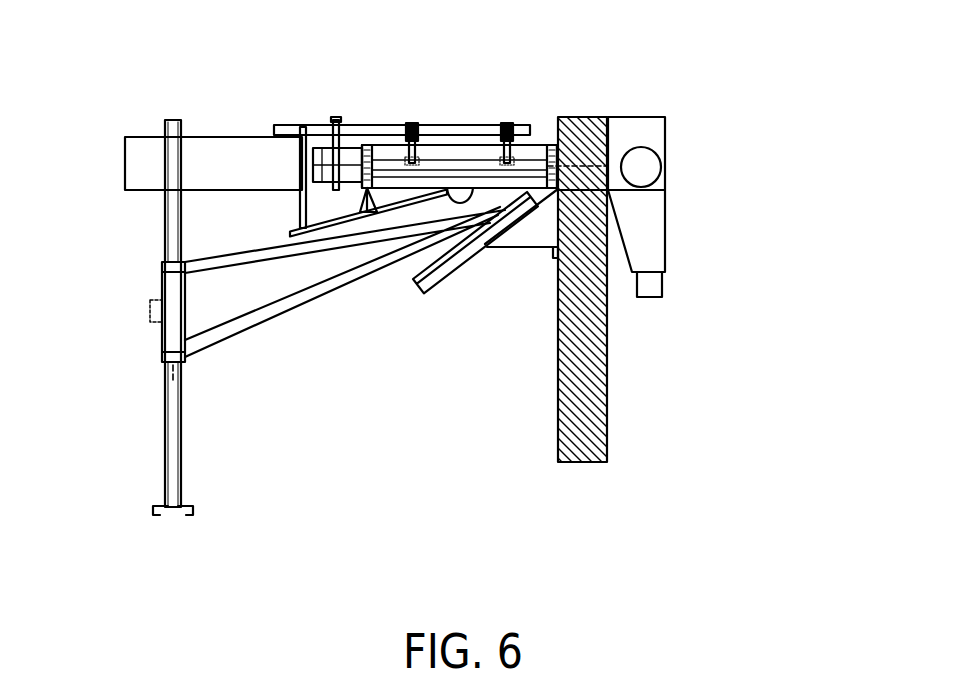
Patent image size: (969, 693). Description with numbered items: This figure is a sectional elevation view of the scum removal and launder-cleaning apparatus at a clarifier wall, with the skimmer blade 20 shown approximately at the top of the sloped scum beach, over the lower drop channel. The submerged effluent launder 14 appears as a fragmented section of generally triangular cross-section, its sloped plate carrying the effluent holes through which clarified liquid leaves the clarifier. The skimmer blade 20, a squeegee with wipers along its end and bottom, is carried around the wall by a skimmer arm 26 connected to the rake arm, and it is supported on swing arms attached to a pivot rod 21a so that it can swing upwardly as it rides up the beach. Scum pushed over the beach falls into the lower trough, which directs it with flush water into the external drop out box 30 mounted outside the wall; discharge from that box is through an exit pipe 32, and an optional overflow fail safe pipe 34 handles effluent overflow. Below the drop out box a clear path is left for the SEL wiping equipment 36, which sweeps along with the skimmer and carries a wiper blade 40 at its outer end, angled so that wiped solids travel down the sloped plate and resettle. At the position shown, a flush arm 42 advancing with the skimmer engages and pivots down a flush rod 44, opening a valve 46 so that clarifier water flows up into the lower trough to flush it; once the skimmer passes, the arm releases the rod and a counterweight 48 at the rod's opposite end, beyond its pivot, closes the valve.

The submerged effluent launder 14 is at (526, 249).
The skimmer blade 20 is at (527, 153).
The pivot rod 21a is at (473, 126).
The skimmer arm 26 is at (142, 153).
The external drop out box 30 is at (662, 200).
The exit pipe 32 is at (665, 283).
The overflow fail safe pipe 34 is at (646, 146).
The SEL wiping equipment 36 is at (293, 343).
The wiper blade 40 is at (413, 278).
The flush arm 42 is at (300, 193).
The flush rod 44 is at (312, 224).
The valve 46 is at (367, 193).
The counterweight 48 is at (470, 190).